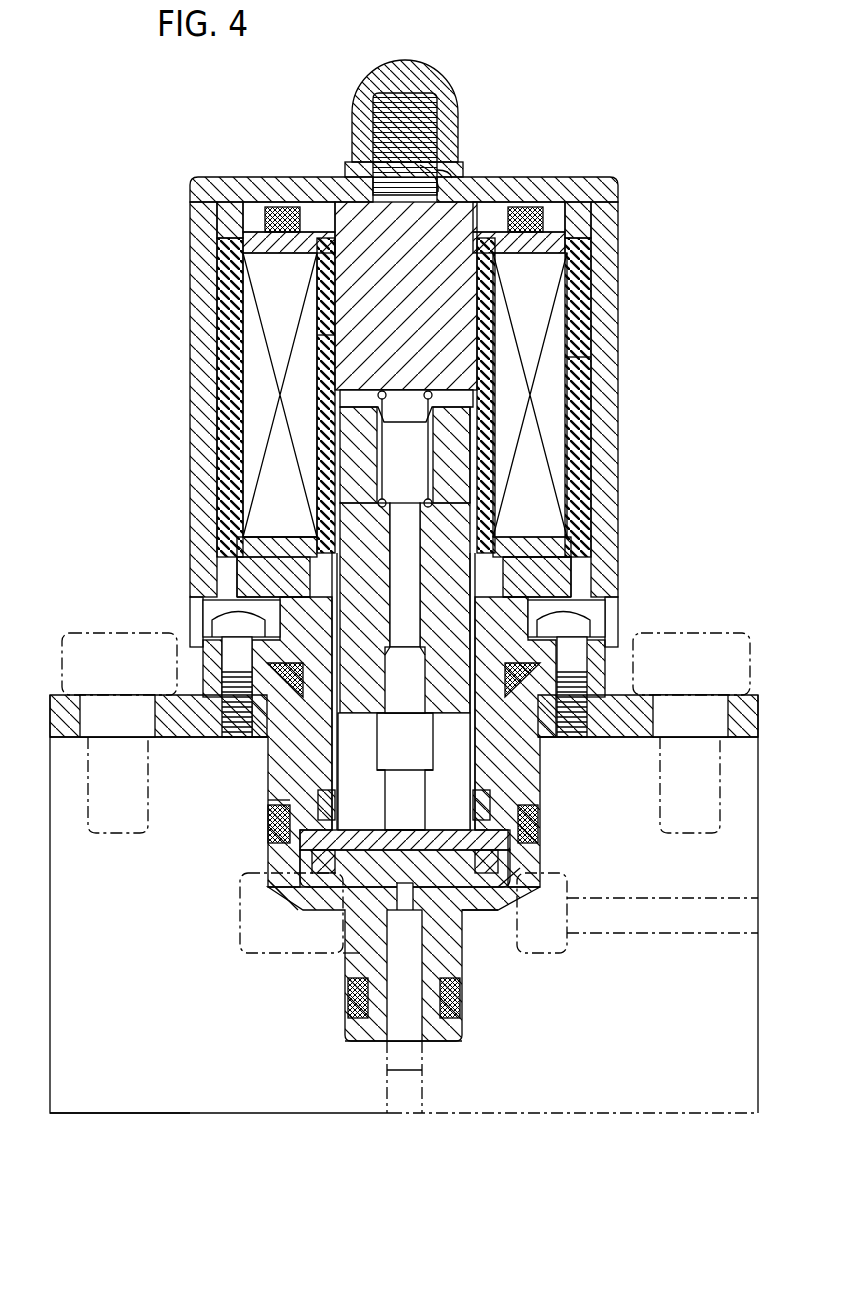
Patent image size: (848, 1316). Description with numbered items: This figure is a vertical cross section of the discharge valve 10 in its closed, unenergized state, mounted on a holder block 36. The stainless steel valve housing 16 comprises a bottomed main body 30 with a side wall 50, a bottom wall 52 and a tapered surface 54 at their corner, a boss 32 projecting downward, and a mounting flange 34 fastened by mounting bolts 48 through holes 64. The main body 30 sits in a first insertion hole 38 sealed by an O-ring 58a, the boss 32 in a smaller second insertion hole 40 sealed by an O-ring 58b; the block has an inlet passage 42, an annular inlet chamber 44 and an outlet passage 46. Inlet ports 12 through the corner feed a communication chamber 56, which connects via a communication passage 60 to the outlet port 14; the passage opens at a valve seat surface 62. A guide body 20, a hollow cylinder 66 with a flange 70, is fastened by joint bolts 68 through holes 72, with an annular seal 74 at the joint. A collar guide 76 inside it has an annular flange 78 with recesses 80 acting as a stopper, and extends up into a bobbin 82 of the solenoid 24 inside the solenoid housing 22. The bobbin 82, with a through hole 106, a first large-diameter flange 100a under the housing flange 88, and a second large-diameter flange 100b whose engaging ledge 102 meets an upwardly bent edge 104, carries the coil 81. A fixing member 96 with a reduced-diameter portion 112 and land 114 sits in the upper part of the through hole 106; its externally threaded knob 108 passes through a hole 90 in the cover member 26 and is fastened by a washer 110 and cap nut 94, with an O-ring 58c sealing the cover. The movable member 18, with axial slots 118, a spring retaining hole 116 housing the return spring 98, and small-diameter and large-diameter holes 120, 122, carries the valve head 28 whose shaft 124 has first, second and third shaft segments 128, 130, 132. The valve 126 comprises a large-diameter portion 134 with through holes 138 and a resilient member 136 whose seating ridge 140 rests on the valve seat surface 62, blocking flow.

The discharge valve 10 is at (545, 84).
The inlet ports 12 is at (264, 880).
The outlet port 14 is at (396, 1046).
The valve housing 16 is at (542, 796).
The movable member 18 is at (441, 530).
The guide body 20 is at (274, 618).
The solenoid housing 22 is at (579, 300).
The solenoid 24 is at (262, 358).
The cover member 26 is at (612, 197).
The valve head 28 is at (432, 790).
The main body 30 is at (284, 849).
The boss 32 is at (460, 1035).
The mounting flange 34 is at (70, 741).
The holder block 36 is at (631, 992).
The first insertion hole 38 is at (570, 776).
The second insertion hole 40 is at (342, 978).
The inlet passage 42 is at (690, 936).
The annular inlet chamber 44 is at (256, 946).
The outlet passage 46 is at (418, 1071).
The mounting bolts 48 is at (106, 636).
The side wall 50 is at (284, 780).
The bottom wall 52 is at (342, 912).
The tapered surface 54 is at (520, 890).
The communication chamber 56 is at (309, 806).
The O-ring 58a is at (270, 831).
The O-ring 58b is at (462, 1000).
The O-ring 58c is at (282, 208).
The communication passage 60 is at (440, 962).
The valve seat surface 62 is at (300, 906).
The holes 64 is at (94, 716).
The hollow cylinder 66 is at (470, 727).
The joint bolts 68 is at (216, 629).
The flange 70 is at (215, 661).
The holes 72 is at (236, 686).
The annular seal 74 is at (286, 692).
The collar guide 76 is at (540, 746).
The annular flange 78 is at (276, 816).
The recesses 80 is at (558, 181).
The coil 81 is at (552, 337).
The bobbin 82 is at (322, 284).
The flange 88 is at (507, 214).
The hole 90 is at (440, 171).
The cap nut 94 is at (372, 82).
The fixing member 96 is at (459, 296).
The return spring 98 is at (378, 395).
The first large-diameter flange 100a is at (545, 238).
The second large-diameter flange 100b is at (562, 560).
The engaging ledge 102 is at (236, 576).
The upwardly bent edge 104 is at (240, 560).
The through hole 106 is at (570, 358).
The externally threaded knob 108 is at (416, 112).
The washer 110 is at (350, 165).
The reduced-diameter portion 112 is at (314, 336).
The land 114 is at (405, 412).
The spring retaining hole 116 is at (474, 489).
The axial slots 118 is at (230, 441).
The small-diameter hole 120 is at (470, 560).
The large-diameter hole 122 is at (560, 606).
The shaft 124 is at (332, 502).
The valve 126 is at (380, 830).
The first shaft segment 128 is at (280, 522).
The second shaft segment 130 is at (386, 710).
The third shaft segment 132 is at (386, 770).
The large-diameter portion 134 is at (458, 812).
The resilient member 136 is at (505, 846).
The through holes 138 is at (526, 915).
The seating ridge 140 is at (462, 918).